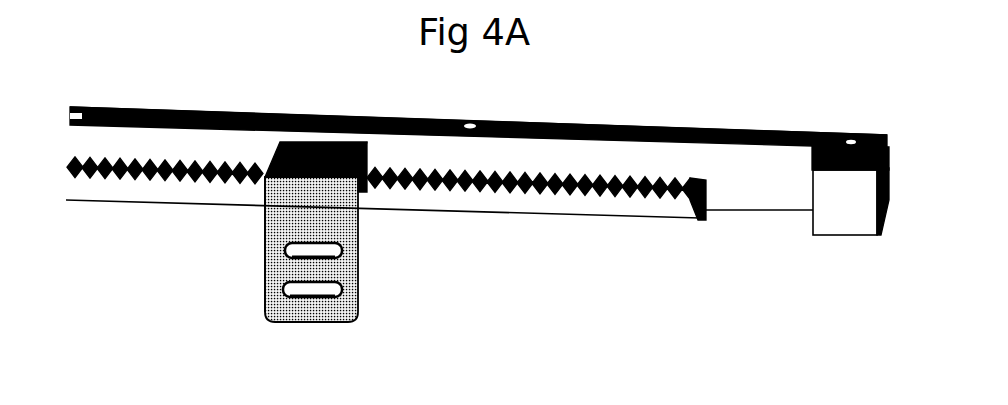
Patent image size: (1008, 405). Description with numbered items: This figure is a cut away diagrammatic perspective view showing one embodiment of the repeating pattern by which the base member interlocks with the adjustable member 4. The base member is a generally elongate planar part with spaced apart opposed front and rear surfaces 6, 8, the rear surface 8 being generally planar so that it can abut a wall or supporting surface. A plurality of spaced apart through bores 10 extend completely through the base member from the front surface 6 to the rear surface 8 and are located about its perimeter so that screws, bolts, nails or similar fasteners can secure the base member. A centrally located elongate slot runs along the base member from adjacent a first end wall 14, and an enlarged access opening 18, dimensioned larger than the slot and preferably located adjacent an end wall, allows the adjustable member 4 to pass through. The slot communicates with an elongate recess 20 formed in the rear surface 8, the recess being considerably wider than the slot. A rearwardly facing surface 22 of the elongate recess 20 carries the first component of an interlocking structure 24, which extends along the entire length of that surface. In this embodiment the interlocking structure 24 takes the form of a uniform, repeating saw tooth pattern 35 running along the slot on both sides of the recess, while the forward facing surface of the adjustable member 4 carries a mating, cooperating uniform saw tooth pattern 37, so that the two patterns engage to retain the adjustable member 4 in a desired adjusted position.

The adjustable member 4 is at (356, 273).
The front surface 6 is at (608, 218).
The rear surface 8 is at (713, 131).
The through bores 10 is at (470, 124).
The first end wall 14 is at (885, 212).
The access opening 18 is at (758, 200).
The elongate recess 20 is at (646, 165).
The rearwardly facing surface 22 is at (176, 178).
The interlocking structure 24 is at (513, 190).
The saw tooth pattern 35 is at (122, 214).
The saw tooth pattern 37 is at (262, 190).